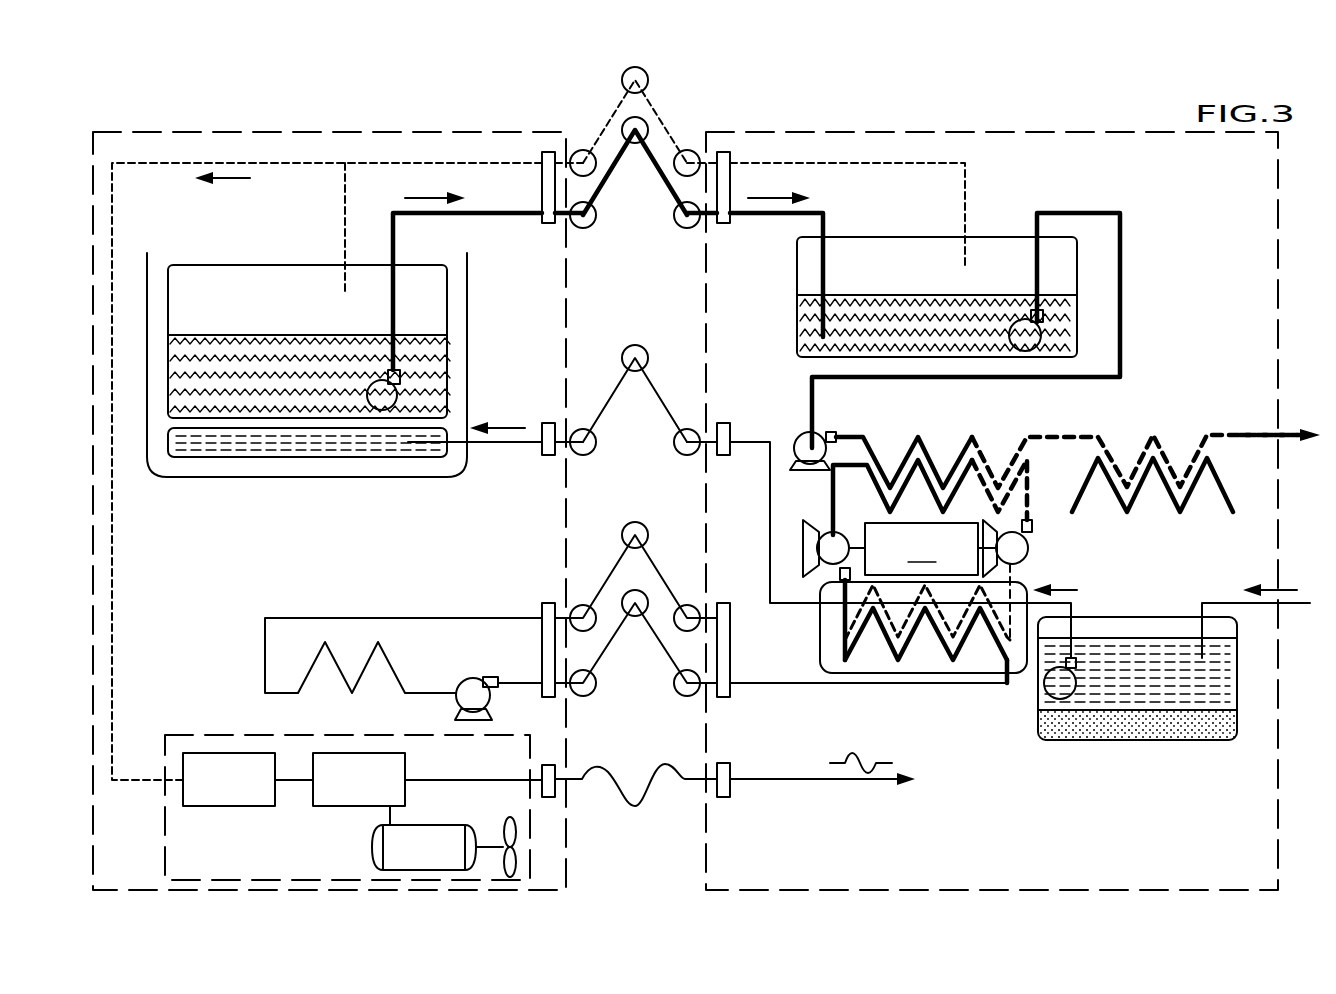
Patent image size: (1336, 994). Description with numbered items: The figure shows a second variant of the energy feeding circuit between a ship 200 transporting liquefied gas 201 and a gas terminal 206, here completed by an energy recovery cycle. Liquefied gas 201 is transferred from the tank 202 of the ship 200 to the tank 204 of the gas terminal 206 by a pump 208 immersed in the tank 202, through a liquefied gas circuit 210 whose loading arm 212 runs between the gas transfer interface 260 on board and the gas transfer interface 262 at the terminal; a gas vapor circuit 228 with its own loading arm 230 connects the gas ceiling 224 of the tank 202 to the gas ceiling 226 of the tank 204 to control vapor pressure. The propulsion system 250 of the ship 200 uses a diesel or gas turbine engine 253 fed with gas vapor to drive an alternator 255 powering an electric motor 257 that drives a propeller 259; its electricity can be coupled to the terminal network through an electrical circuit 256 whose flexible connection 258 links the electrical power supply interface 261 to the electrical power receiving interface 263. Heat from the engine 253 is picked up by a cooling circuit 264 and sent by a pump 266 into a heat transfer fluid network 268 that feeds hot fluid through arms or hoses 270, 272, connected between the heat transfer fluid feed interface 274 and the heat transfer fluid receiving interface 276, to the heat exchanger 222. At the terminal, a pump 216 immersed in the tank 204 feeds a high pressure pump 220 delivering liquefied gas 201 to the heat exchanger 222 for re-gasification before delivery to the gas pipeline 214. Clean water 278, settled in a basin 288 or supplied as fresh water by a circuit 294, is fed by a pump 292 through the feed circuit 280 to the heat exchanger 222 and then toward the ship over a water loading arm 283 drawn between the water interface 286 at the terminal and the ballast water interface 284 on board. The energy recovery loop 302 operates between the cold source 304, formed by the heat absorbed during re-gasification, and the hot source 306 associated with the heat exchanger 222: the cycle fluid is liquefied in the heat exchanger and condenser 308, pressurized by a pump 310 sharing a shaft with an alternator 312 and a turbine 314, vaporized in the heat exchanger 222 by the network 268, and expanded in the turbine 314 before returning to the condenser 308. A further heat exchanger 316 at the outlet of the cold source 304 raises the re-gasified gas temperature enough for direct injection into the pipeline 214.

The ship 200 is at (175, 123).
The liquefied gas 201 is at (256, 355).
The tank of the ship 202 is at (190, 265).
The tank of the gas terminal 204 is at (797, 272).
The gas terminal 206 is at (968, 132).
The pump 208 is at (385, 395).
The liquefied gas circuit 210 is at (478, 215).
The loading arm 212 is at (618, 168).
The gas pipeline 214 is at (1258, 435).
The pump 216 is at (1021, 320).
The high pressure pump 220 is at (808, 445).
The heat exchanger 222 is at (910, 673).
The gas ceiling of the ship tank 224 is at (283, 292).
The gas ceiling of the terminal tank 226 is at (893, 248).
The gas vapor circuit 228 is at (455, 163).
The loading arm 230 is at (650, 92).
The propulsion system 250 is at (248, 745).
The diesel or gas turbine engine 253 is at (242, 795).
The alternator 255 is at (343, 790).
The electrical circuit 256 is at (503, 778).
The electric motor 257 is at (427, 837).
The flexible connection 258 is at (650, 795).
The propeller 259 is at (503, 832).
The gas transfer interface 260 is at (548, 152).
The electrical power supply interface 261 is at (548, 765).
The gas transfer interface 262 is at (722, 152).
The electrical power receiving interface 263 is at (730, 790).
The cooling circuit 264 is at (405, 680).
The pump 266 is at (470, 682).
The heat transfer fluid network 268 is at (770, 687).
The arm or hose 270 is at (652, 562).
The arm or hose 272 is at (613, 645).
The heat transfer fluid feed interface 274 is at (548, 603).
The heat transfer fluid receiving interface 276 is at (725, 698).
The water 278 is at (1160, 700).
The feed circuit 280 is at (503, 445).
The conduit through rollers 283 is at (655, 397).
The ballast water interface 284 is at (549, 423).
The water interface 286 is at (727, 423).
The basin 288 is at (1178, 617).
The pump 292 is at (1063, 700).
The circuit 294 is at (1222, 595).
The energy recovery loop 302 is at (1030, 500).
The cold source 304 is at (987, 440).
The hot source 306 is at (1017, 688).
The heat exchanger and condenser 308 is at (880, 445).
The pump 310 is at (840, 535).
The alternator 312 is at (923, 549).
The turbine 314 is at (1032, 553).
The further heat exchanger 316 is at (1215, 495).